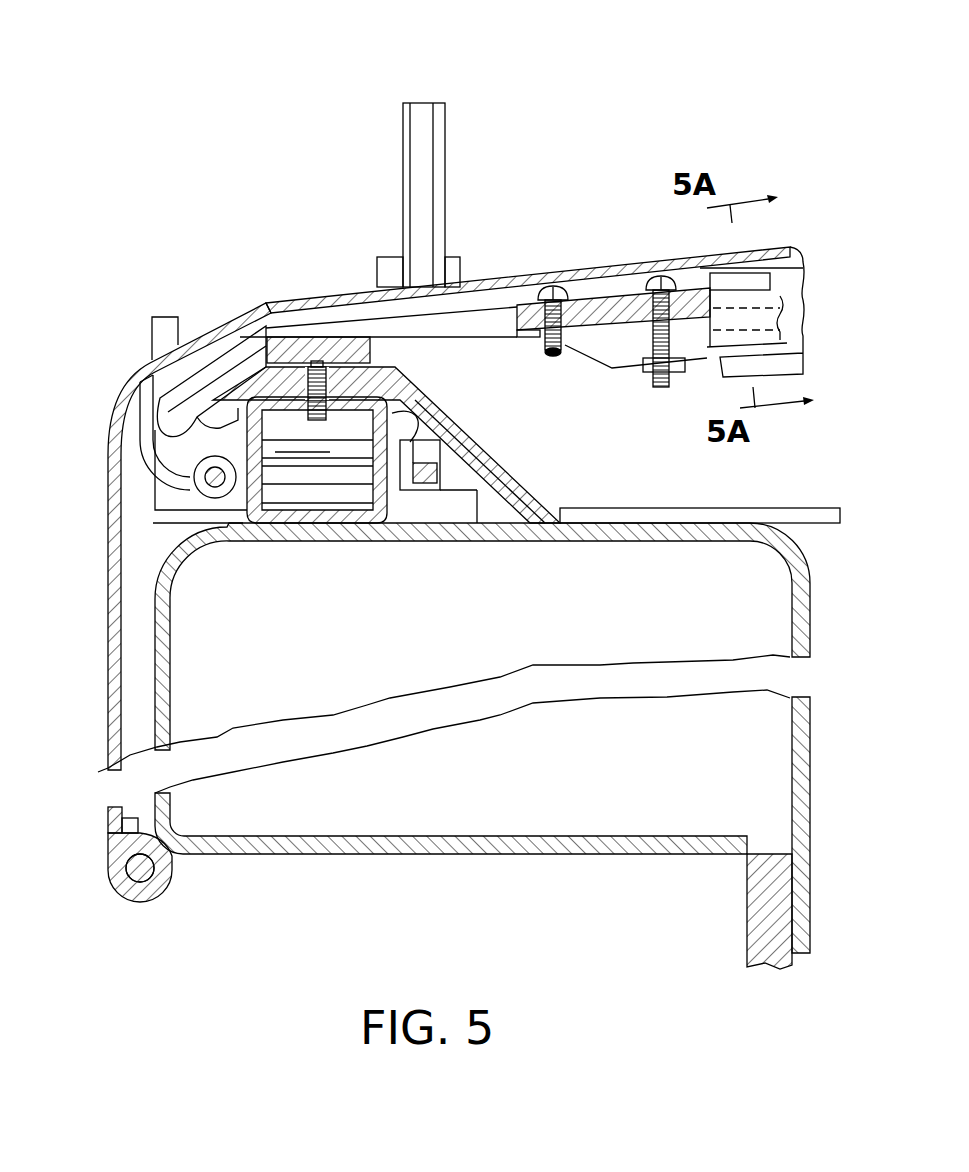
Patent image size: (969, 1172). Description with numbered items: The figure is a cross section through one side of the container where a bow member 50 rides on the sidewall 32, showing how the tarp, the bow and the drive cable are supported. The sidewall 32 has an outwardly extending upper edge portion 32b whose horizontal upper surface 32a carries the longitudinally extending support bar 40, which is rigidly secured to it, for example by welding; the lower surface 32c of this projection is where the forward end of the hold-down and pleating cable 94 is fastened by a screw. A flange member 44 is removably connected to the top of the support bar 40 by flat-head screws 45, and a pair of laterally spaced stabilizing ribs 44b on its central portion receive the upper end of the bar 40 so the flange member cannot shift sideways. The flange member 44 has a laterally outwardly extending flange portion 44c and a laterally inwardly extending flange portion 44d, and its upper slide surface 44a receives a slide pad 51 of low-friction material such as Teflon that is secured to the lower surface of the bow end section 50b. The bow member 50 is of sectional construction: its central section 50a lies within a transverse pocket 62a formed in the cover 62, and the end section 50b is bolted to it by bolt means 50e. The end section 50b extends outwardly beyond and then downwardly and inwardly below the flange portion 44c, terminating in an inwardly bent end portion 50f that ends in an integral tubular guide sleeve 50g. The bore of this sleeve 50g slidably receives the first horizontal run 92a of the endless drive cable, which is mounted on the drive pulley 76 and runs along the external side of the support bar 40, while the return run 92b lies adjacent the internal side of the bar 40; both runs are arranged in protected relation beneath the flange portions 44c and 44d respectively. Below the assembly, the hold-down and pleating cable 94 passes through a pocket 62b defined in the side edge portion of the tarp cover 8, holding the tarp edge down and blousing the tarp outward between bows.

The tarp cover 8 is at (770, 249).
The sidewall 32 is at (757, 927).
The horizontal upper surface 32a is at (673, 523).
The upper edge portion 32b is at (107, 763).
The lower surface 32c is at (370, 850).
The support bar 40 is at (383, 470).
The flange member 44 is at (439, 390).
The upper slide surface 44a is at (262, 320).
The stabilizing ribs 44b is at (140, 374).
The laterally outwardly extending flange portion 44c is at (205, 400).
The laterally inwardly extending flange portion 44d is at (531, 489).
The flat-head screws 45 is at (327, 410).
The bow member 50 is at (583, 292).
The central section 50a is at (707, 345).
The end section 50b is at (360, 325).
The bolt means 50e is at (540, 278).
The inwardly bent end portion 50f is at (143, 458).
The tubular guide sleeve 50g is at (188, 508).
The slide pad 51 is at (297, 338).
The cover 62 is at (600, 268).
The transverse pocket 62a is at (807, 362).
The pocket 62b is at (172, 868).
The drive pulley 76 is at (402, 160).
The first horizontal run 92a is at (220, 498).
The return run 92b is at (430, 490).
The hold-down and pleating cable 94 is at (139, 903).